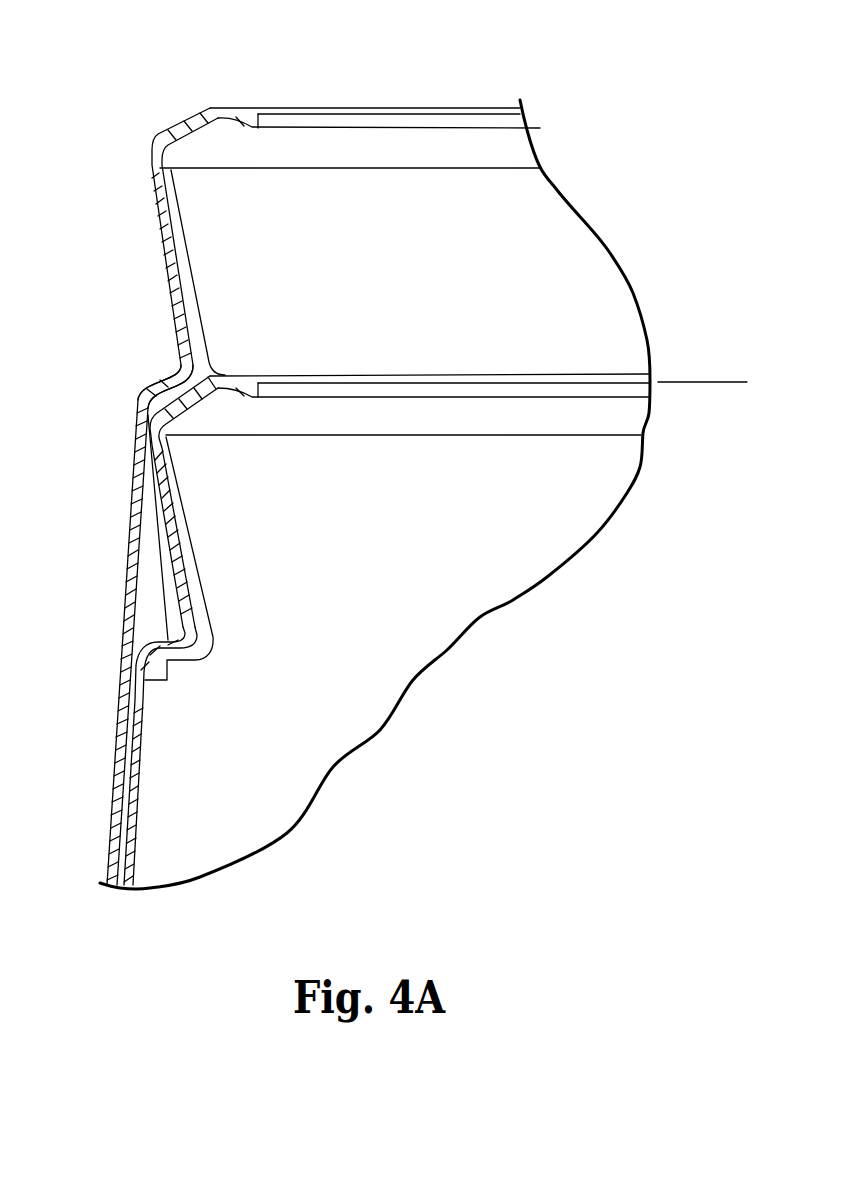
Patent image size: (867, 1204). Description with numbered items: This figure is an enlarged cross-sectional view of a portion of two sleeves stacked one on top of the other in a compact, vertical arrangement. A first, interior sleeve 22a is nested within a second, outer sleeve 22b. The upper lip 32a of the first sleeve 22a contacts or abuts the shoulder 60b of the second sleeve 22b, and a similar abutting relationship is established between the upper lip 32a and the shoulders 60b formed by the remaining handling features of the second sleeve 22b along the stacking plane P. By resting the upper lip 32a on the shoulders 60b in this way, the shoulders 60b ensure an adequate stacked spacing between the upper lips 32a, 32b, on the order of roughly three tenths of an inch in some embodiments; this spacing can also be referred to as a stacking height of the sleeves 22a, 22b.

The first sleeve 22a is at (148, 872).
The second sleeve 22b is at (118, 630).
The upper lip 32a is at (231, 368).
The upper lip 32b is at (226, 98).
The shoulder 60b is at (170, 380).
The stacking plane P is at (715, 380).